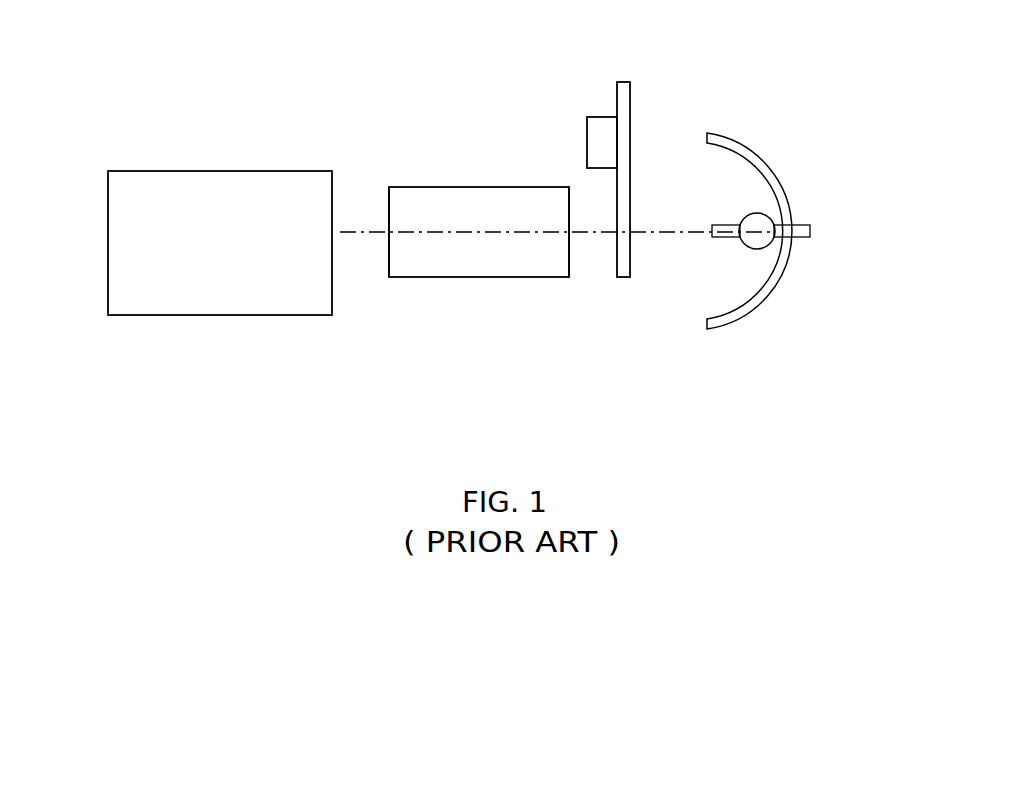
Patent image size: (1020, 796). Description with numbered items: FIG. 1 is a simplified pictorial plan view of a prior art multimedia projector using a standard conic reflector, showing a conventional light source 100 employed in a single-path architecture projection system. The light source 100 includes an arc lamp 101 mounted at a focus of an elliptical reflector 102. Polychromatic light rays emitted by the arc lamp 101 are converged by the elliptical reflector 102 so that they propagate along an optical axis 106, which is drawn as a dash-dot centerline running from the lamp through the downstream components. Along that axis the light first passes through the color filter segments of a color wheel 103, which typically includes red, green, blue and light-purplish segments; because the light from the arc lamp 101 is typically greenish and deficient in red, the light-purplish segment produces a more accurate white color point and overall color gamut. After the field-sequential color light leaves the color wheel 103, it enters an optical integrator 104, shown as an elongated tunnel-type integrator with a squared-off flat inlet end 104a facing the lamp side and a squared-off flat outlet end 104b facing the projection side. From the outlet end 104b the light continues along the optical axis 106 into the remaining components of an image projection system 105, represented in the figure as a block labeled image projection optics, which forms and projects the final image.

The light source 100 is at (817, 131).
The arc lamp 101 is at (755, 238).
The elliptical reflector 102 is at (776, 288).
The color wheel 103 is at (630, 87).
The optical integrator 104 is at (458, 197).
The inlet end 104a is at (563, 283).
The outlet end 104b is at (397, 283).
The image projection system 105 is at (120, 170).
The optical axis 106 is at (680, 233).